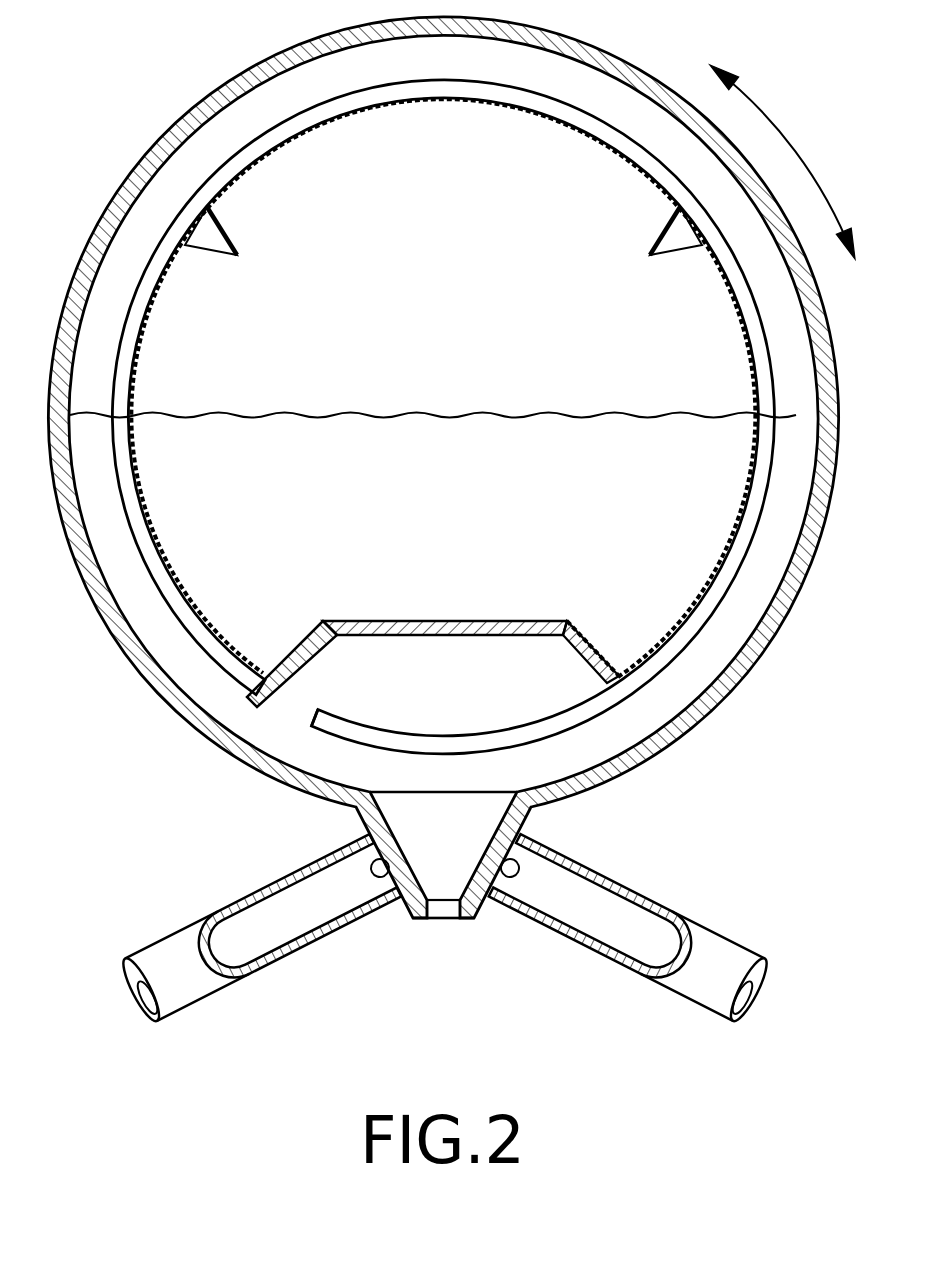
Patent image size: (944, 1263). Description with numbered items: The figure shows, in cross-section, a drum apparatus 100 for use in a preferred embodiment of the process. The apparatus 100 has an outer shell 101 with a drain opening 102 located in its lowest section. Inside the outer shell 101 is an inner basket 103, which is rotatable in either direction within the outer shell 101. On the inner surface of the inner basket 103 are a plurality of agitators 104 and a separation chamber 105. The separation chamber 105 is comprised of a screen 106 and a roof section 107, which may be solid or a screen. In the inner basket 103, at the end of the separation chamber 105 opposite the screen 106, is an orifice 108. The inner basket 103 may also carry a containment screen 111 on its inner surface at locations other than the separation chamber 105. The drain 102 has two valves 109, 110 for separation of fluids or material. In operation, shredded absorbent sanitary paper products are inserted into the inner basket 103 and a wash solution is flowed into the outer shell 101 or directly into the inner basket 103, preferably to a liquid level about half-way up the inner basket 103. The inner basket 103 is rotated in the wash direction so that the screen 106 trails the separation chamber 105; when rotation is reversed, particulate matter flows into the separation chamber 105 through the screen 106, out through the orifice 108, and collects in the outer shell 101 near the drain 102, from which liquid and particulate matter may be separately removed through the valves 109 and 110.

The apparatus 100 is at (158, 84).
The outer shell 101 is at (533, 36).
The drain opening 102 is at (447, 912).
The inner basket 103 is at (605, 128).
The agitators 104 is at (233, 240).
The separation chamber 105 is at (445, 639).
The screen 106 is at (594, 650).
The roof section 107 is at (425, 621).
The orifice 108 is at (293, 705).
The valve 109 is at (350, 875).
The valve 110 is at (537, 875).
The containment screen 111 is at (152, 308).